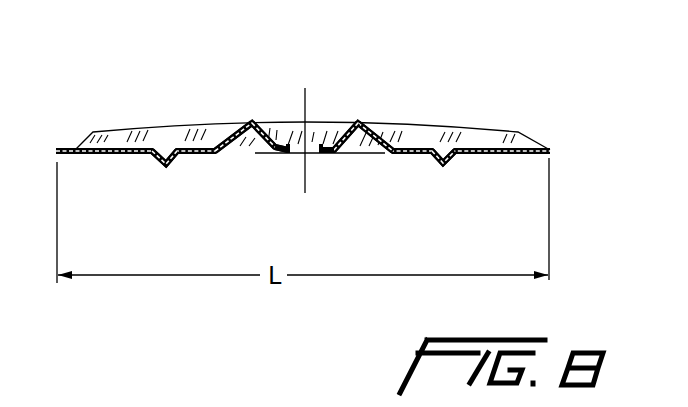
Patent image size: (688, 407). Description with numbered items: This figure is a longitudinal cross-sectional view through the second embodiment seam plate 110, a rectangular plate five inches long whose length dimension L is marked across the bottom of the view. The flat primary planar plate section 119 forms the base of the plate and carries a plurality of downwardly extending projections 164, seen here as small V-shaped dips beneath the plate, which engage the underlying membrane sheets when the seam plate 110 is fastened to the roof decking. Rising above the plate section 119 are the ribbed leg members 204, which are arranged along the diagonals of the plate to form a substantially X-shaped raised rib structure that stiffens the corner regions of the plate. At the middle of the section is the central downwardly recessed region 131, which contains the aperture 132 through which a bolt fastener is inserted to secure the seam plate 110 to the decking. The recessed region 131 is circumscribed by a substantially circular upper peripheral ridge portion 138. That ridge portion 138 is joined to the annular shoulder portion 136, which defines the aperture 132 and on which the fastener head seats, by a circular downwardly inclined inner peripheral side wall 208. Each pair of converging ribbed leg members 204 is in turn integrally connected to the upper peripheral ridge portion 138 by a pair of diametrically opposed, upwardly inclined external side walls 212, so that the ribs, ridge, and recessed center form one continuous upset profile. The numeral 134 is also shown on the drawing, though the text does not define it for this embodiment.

The seam plate 110 is at (483, 68).
The primary planar plate section 119 is at (105, 156).
The central downwardly recessed region 131 is at (327, 122).
The aperture 132 is at (316, 155).
The sheet edge 134 is at (285, 158).
The annular shoulder portion 136 is at (280, 121).
The upper peripheral ridge portion 138 is at (365, 120).
The projections 164 is at (165, 167).
The ribbed leg members 204 is at (147, 130).
The inner peripheral side wall 208 is at (345, 150).
The external side walls 212 is at (227, 135).